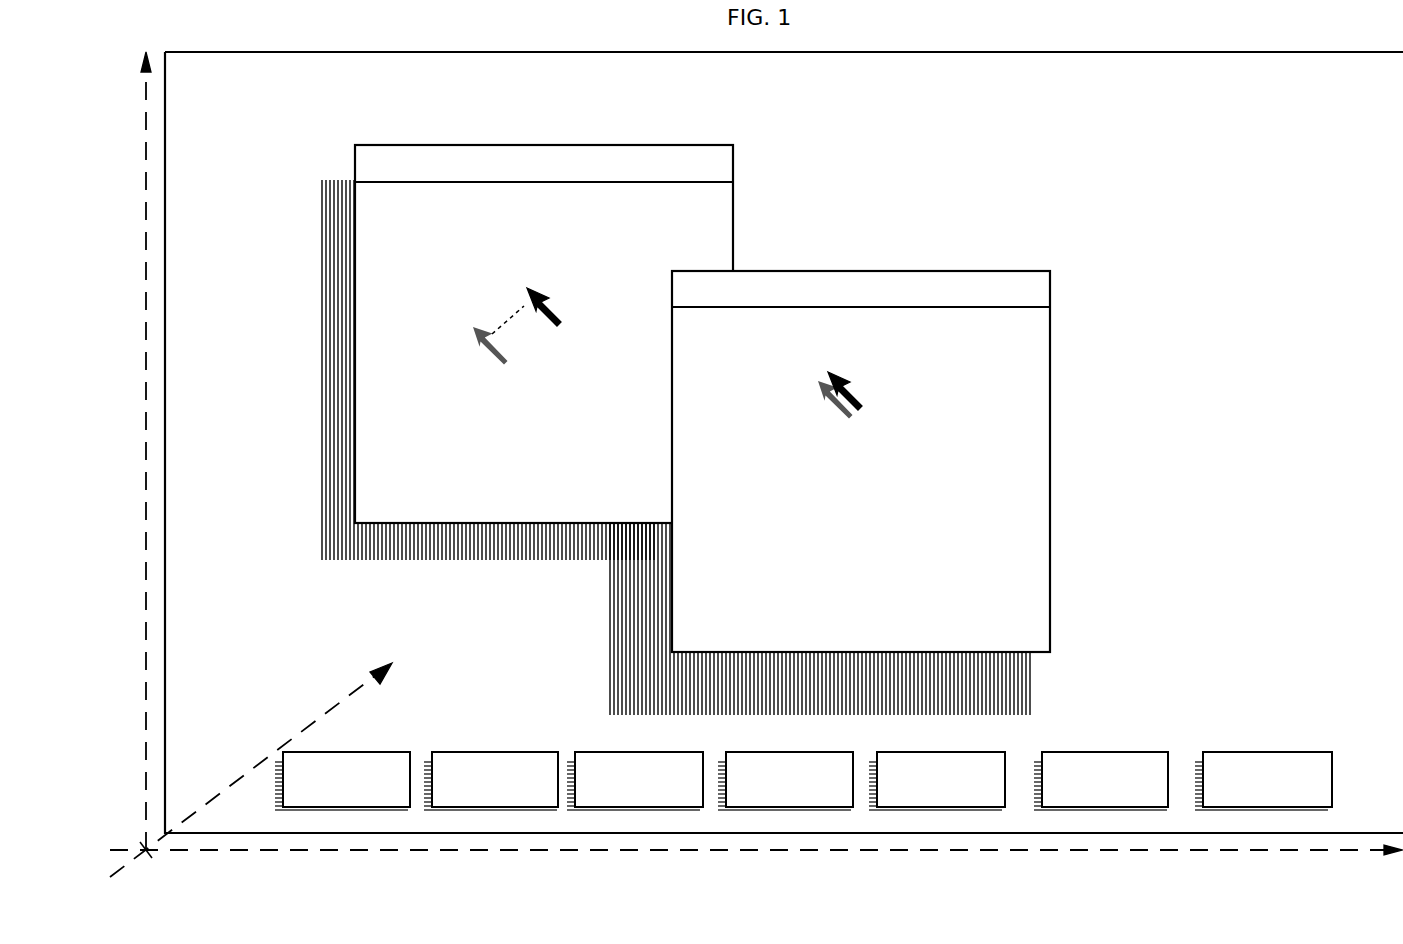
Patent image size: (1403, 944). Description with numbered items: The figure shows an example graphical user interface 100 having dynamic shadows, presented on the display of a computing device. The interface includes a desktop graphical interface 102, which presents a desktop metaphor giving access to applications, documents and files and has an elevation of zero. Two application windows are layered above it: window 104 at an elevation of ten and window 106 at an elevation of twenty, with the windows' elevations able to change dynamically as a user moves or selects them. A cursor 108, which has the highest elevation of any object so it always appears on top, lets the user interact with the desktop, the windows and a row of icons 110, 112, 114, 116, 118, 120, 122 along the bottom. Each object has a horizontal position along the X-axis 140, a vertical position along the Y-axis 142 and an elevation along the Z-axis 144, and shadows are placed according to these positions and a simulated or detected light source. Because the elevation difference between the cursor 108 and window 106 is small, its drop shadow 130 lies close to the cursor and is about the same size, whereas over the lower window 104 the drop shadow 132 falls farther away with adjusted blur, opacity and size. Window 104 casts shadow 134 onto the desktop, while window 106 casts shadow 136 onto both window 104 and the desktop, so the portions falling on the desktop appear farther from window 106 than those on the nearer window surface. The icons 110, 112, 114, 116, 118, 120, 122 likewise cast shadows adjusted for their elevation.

The graphical user interface 100 is at (546, 52).
The desktop graphical interface 102 is at (1366, 86).
The window 104 is at (409, 208).
The window 106 is at (723, 333).
The cursor 108 is at (549, 291).
The icon 110 is at (368, 790).
The icon 112 is at (516, 790).
The icon 114 is at (660, 790).
The icon 116 is at (810, 790).
The icon 118 is at (962, 790).
The icon 120 is at (1126, 790).
The icon 122 is at (1288, 790).
The drop shadow 130 is at (826, 401).
The drop shadow 132 is at (478, 345).
The shadow 134 is at (525, 551).
The shadow 136 is at (846, 696).
The X-axis 140 is at (468, 851).
The Y-axis 142 is at (147, 522).
The Z-axis 144 is at (322, 718).